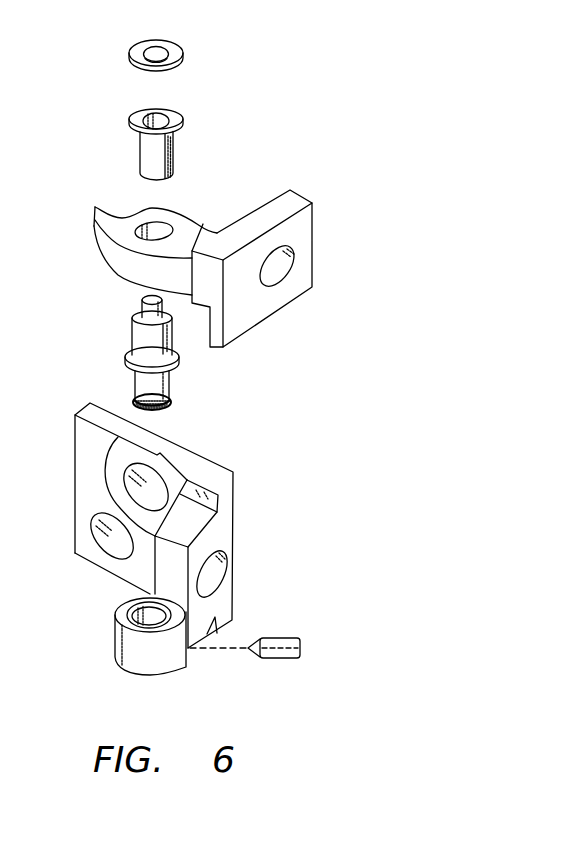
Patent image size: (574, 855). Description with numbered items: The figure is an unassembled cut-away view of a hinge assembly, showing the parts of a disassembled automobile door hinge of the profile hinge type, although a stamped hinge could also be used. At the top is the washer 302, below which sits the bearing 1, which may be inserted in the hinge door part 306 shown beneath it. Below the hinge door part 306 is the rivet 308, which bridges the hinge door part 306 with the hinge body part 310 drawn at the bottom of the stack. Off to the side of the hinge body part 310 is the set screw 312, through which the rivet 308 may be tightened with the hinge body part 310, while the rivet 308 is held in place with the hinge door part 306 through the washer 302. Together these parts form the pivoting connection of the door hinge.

The washer 302 is at (184, 53).
The bearing 1 is at (175, 158).
The hinge door part 306 is at (313, 222).
The rivet 308 is at (172, 390).
The hinge body part 310 is at (233, 522).
The set screw 312 is at (303, 643).